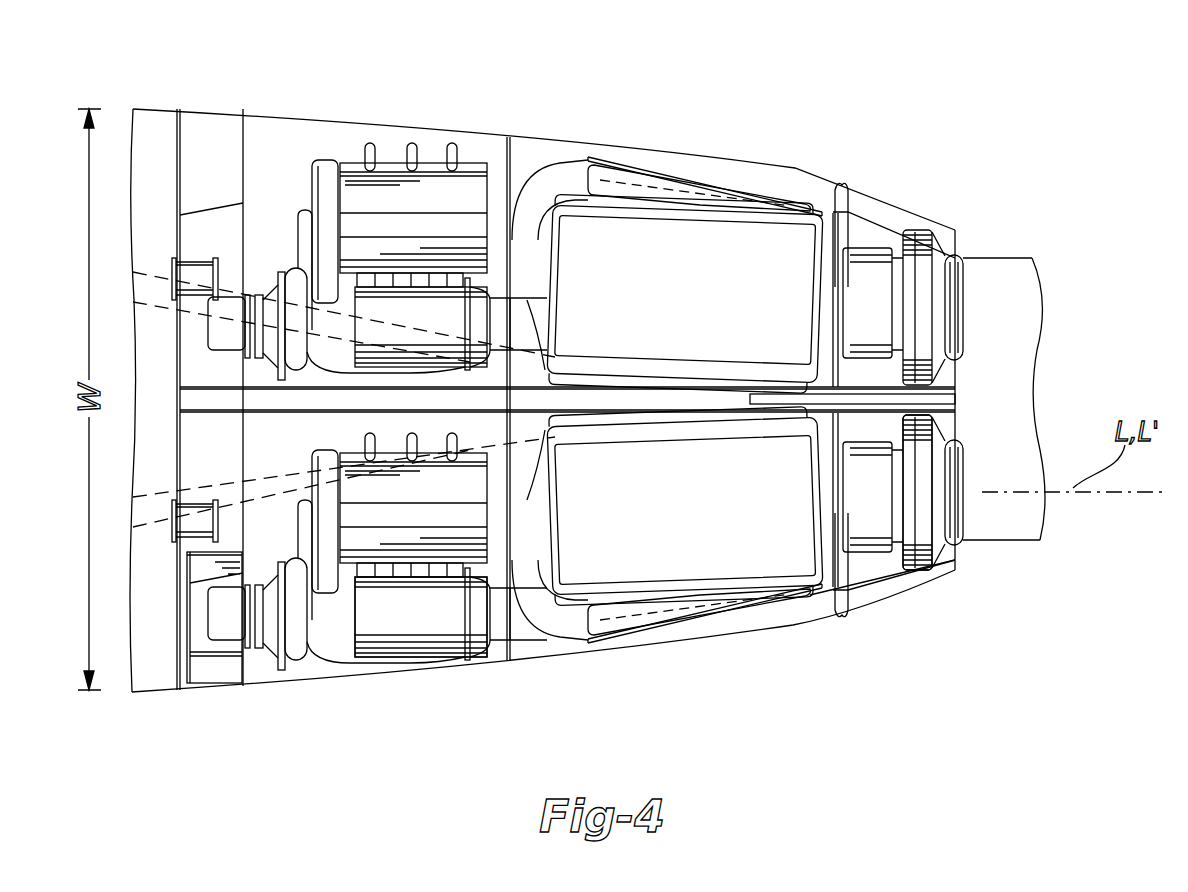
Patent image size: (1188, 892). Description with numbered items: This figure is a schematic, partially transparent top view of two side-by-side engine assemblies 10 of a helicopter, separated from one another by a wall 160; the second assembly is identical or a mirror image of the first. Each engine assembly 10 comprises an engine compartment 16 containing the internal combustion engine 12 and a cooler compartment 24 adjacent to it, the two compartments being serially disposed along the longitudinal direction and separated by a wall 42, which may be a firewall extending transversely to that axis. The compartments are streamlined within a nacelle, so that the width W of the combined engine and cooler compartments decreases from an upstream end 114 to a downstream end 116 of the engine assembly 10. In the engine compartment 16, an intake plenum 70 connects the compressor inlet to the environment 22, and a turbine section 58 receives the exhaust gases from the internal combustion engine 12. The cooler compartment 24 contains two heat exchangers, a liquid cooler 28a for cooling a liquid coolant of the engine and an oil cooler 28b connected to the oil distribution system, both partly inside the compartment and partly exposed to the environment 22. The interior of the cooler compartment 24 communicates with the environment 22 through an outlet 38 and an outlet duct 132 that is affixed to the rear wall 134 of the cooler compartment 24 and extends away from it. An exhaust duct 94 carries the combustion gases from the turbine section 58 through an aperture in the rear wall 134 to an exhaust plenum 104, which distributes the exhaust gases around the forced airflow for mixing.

The engine assembly 10 is at (652, 130).
The internal combustion engine 12 is at (388, 158).
The engine compartment 16 is at (260, 694).
The environment 22 is at (633, 68).
The cooler compartment 24 is at (733, 648).
The liquid cooler 28a is at (652, 292).
The oil cooler 28b is at (615, 644).
The outlet 38 is at (877, 238).
The wall 42 is at (513, 182).
The turbine section 58 is at (443, 628).
The intake plenum 70 is at (208, 694).
The exhaust duct 94 is at (535, 620).
The exhaust plenum 104 is at (917, 562).
The upstream end 114 is at (160, 102).
The downstream end 116 is at (892, 160).
The outlet duct 132 is at (872, 552).
The rear wall 134 is at (848, 245).
The wall 160 is at (968, 399).